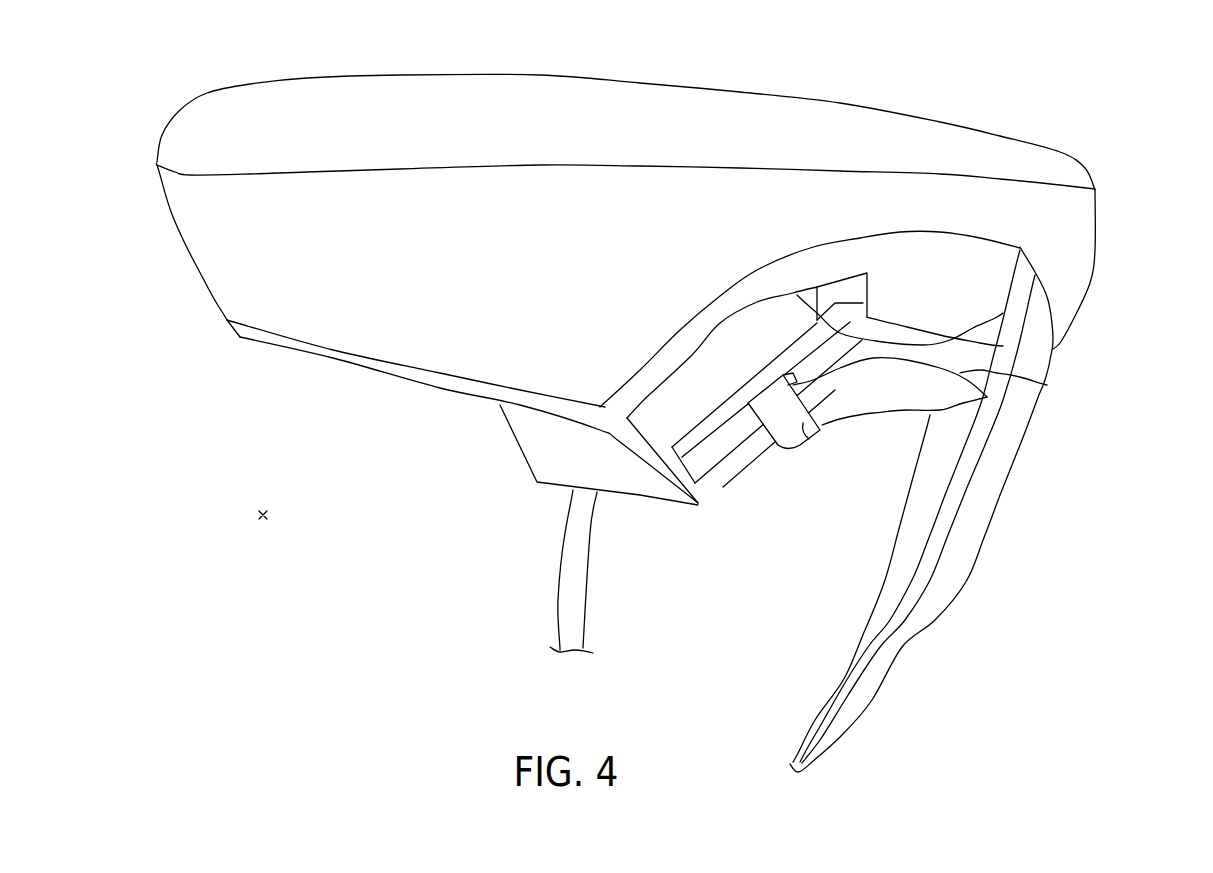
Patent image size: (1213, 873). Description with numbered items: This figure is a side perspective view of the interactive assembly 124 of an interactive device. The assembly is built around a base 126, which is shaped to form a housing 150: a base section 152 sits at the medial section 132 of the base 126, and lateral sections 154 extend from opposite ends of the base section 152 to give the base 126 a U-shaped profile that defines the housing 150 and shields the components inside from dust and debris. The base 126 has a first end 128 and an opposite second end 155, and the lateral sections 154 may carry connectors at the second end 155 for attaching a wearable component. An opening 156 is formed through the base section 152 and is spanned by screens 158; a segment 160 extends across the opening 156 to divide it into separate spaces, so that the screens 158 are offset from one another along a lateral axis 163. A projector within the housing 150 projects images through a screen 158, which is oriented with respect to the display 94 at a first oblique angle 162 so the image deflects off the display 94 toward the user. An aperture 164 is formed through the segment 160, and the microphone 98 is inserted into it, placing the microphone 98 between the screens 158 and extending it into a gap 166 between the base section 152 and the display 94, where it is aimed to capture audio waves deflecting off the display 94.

The display 94 is at (902, 647).
The microphone 98 is at (809, 433).
The interactive assembly 124 is at (874, 501).
The base 126 is at (632, 108).
The first end 128 is at (1125, 185).
The medial section 132 is at (533, 60).
The housing 150 is at (485, 423).
The base section 152 is at (766, 455).
The lateral sections 154 is at (290, 345).
The second end 155 is at (157, 215).
The opening 156 is at (833, 470).
The screen 158 is at (667, 412).
The segment 160 is at (698, 503).
The first oblique angle 162 is at (987, 332).
The lateral axis 163 is at (263, 518).
The aperture 164 is at (1047, 385).
The gap 166 is at (900, 492).